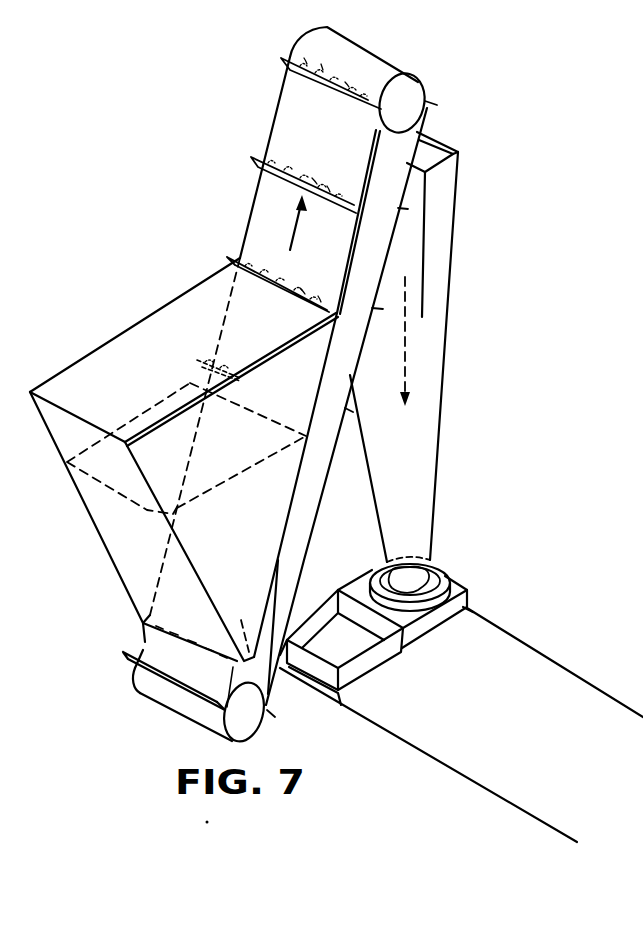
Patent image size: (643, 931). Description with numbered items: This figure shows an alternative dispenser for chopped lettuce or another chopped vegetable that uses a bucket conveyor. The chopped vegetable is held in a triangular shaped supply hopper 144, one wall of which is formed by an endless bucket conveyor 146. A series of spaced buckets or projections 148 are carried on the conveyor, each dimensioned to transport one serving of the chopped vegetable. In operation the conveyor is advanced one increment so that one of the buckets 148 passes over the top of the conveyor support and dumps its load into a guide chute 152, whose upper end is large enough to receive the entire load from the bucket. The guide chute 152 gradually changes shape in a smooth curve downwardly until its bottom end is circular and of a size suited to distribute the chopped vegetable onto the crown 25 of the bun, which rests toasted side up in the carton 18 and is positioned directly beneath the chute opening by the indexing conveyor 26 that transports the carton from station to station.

The endless bucket conveyor 146 is at (251, 217).
The buckets or projections 148 is at (292, 59).
The supply hopper 144 is at (97, 531).
The guide chute 152 is at (452, 243).
The crown 25 is at (433, 572).
The carton 18 is at (468, 601).
The indexing conveyor 26 is at (614, 657).